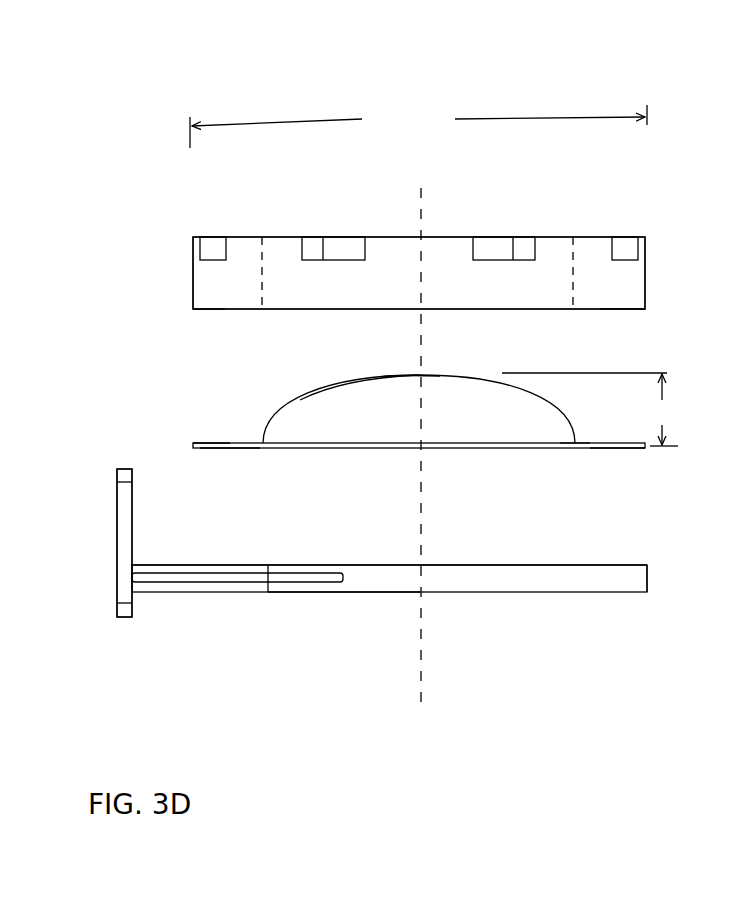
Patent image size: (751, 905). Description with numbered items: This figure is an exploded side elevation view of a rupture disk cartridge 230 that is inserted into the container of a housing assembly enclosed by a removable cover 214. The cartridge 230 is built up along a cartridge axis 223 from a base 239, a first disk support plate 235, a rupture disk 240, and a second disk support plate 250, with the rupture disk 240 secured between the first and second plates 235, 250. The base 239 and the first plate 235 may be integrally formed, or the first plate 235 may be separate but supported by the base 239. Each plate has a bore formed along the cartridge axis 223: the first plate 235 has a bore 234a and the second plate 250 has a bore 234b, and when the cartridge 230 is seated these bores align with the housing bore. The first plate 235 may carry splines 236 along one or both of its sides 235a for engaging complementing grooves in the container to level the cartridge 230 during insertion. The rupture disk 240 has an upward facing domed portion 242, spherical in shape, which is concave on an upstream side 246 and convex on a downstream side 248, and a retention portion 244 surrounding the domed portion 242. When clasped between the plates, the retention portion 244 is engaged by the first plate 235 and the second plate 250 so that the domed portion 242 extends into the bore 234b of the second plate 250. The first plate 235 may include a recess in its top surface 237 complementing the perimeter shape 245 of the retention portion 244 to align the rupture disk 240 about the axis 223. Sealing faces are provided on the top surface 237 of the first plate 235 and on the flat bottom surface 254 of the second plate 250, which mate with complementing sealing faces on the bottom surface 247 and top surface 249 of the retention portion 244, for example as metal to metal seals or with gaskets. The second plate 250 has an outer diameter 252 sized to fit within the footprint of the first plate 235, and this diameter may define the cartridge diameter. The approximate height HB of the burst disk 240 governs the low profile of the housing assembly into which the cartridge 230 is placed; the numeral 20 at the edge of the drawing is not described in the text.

The rupture disk cartridge 230 is at (171, 147).
The outer diameter 252 is at (418, 126).
The second disk support plate 250 is at (647, 235).
The bore 234b is at (572, 242).
The bottom surface 254 is at (222, 312).
The domed portion 242 is at (277, 414).
The upstream side 246 is at (357, 384).
The downstream side 248 is at (381, 376).
The rupture disk 240 is at (648, 448).
The perimeter shape 245 is at (192, 443).
The bottom surface 247 is at (235, 452).
The top surface 249 is at (582, 449).
The retention portion 244 is at (616, 449).
The height of burst disk HB is at (590, 409).
The device 20 is at (738, 441).
The cartridge axis 223 is at (421, 703).
The removable cover 214 is at (116, 518).
The splines 236 is at (158, 583).
The bore 234a is at (586, 584).
The sides 235a is at (205, 592).
The top surface 237 is at (197, 563).
The base 239 is at (355, 592).
The first disk support plate 235 is at (647, 596).